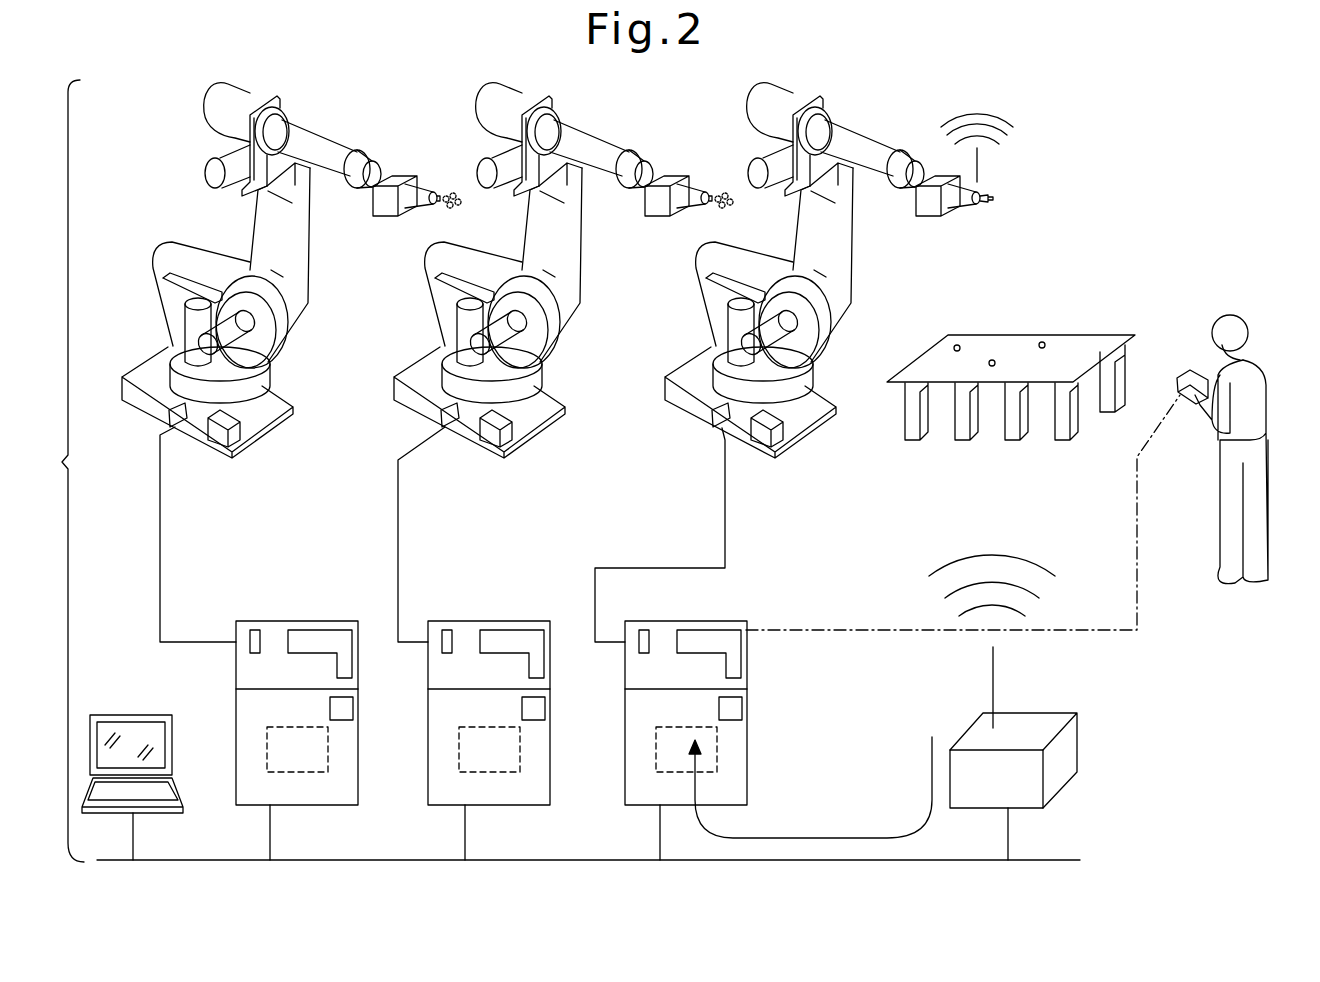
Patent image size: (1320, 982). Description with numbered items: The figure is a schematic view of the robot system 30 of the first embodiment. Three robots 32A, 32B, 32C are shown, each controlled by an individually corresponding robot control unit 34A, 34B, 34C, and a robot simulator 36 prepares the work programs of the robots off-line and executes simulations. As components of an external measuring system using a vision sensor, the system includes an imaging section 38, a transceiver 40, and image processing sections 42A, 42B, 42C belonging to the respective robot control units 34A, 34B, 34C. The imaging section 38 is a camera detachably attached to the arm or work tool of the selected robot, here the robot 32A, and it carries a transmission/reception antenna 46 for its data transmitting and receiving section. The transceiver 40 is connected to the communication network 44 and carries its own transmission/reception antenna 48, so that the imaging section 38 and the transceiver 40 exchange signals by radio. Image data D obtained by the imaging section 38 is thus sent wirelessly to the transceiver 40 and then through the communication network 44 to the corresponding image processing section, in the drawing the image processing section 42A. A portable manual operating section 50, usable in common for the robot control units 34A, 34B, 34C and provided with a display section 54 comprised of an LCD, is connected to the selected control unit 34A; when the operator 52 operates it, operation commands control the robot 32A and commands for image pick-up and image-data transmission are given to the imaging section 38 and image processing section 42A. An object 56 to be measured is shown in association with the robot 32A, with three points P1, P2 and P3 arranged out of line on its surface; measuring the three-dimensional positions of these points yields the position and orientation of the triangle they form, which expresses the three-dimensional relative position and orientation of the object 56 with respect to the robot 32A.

The robot system 30 is at (58, 471).
The robot 32A is at (744, 99).
The robot 32B is at (472, 99).
The robot 32C is at (199, 100).
The robot control unit 34A is at (624, 779).
The robot control unit 34B is at (428, 779).
The robot control unit 34C is at (236, 779).
The robot simulator 36 is at (136, 714).
The imaging section (camera) 38 is at (446, 187).
The transceiver 40 is at (1080, 763).
The image processing section 42A is at (717, 752).
The image processing section 42B is at (520, 752).
The image processing section 42C is at (328, 752).
The communication network 44 is at (515, 857).
The transmission/reception antenna 46 is at (972, 157).
The transmission/reception antenna 48 is at (993, 678).
The portable-type manual operating section 50 is at (1200, 358).
The operator 52 is at (1207, 590).
The display section 54 is at (1184, 376).
The object to be measured 56 is at (1110, 334).
The point P1 is at (1044, 342).
The point P2 is at (993, 360).
The point P3 is at (957, 345).
The image data D is at (810, 787).